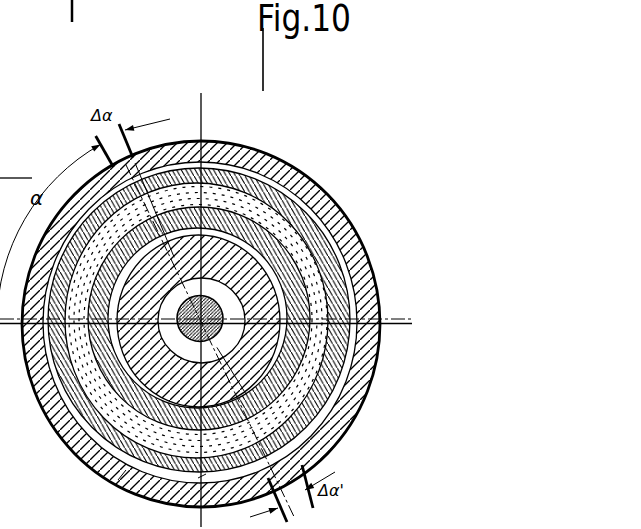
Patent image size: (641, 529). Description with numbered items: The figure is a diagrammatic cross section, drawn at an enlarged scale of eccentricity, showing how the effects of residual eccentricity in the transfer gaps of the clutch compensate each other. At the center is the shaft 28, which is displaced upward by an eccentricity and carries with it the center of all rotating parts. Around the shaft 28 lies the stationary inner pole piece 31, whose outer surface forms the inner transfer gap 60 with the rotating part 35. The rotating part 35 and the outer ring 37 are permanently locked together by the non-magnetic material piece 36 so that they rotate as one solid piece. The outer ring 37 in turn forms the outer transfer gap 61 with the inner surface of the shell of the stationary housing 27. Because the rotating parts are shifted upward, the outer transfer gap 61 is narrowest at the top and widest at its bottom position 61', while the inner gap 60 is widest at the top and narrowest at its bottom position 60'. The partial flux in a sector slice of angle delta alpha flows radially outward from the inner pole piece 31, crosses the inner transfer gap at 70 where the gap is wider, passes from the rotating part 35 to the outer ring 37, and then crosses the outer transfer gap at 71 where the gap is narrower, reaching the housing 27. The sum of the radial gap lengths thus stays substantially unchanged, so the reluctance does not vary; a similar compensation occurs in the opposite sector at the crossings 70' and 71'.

The housing 27 is at (186, 140).
The shaft 28 is at (343, 277).
The inner pole piece 31 is at (342, 257).
The rotating part 35 is at (333, 230).
The non-magnetic material piece 36 is at (313, 203).
The outer ring 37 is at (300, 170).
The inner transfer gap 60 is at (202, 261).
The outer transfer gap 61 is at (201, 237).
The inner transfer gap crossing point 70 is at (146, 175).
The outer transfer gap crossing point 71 is at (85, 138).
The inner transfer gap crossing point 70' is at (348, 455).
The outer transfer gap crossing point 71' is at (324, 478).
The inner transfer gap bottom position 60' is at (102, 489).
The outer transfer gap bottom position 61' is at (170, 501).